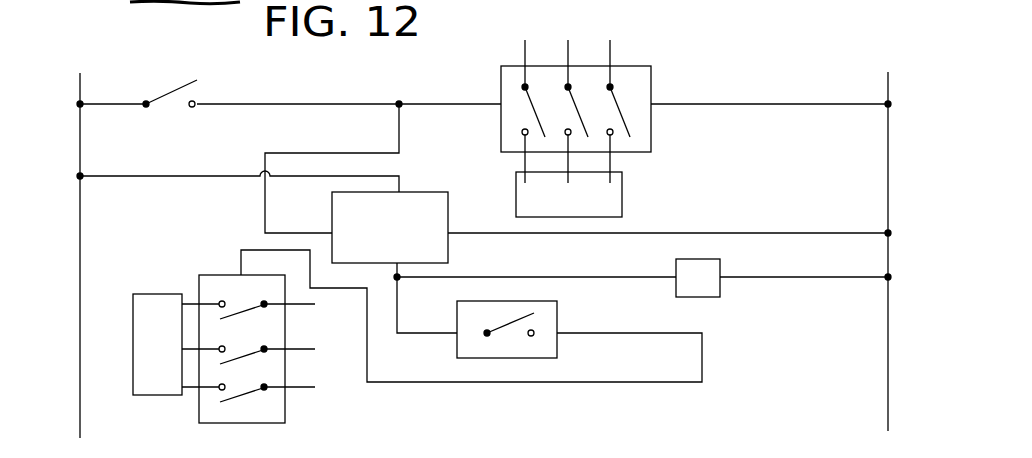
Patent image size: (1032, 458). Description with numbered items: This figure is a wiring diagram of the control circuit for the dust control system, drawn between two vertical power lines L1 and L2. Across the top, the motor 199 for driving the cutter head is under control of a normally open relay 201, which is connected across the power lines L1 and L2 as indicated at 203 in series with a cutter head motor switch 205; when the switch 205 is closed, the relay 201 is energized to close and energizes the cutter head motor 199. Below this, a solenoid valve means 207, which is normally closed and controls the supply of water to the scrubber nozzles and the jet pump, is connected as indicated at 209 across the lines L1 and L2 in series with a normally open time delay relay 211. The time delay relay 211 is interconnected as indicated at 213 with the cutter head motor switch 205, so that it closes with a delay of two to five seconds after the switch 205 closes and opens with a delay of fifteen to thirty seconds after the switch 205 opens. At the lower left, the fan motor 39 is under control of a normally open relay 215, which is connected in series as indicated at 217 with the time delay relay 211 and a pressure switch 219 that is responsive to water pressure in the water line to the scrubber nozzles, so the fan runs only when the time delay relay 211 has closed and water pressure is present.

The power line L1 is at (80, 355).
The power line L2 is at (892, 207).
The fan motor 39 is at (150, 395).
The cutter head motor 199 is at (584, 212).
The normally open relay 201 is at (656, 76).
The connection across power lines 203 is at (268, 104).
The cutter head motor switch 205 is at (180, 85).
The solenoid valve means 207 is at (722, 265).
The connection across lines 209 is at (170, 176).
The time delay relay 211 is at (408, 247).
The interconnection 213 is at (372, 152).
The normally open relay 215 is at (287, 400).
The series connection 217 is at (241, 258).
The pressure switch 219 is at (560, 325).